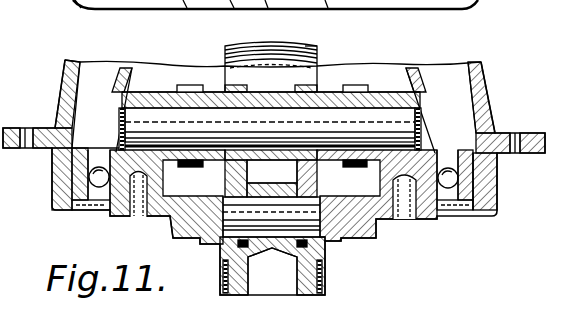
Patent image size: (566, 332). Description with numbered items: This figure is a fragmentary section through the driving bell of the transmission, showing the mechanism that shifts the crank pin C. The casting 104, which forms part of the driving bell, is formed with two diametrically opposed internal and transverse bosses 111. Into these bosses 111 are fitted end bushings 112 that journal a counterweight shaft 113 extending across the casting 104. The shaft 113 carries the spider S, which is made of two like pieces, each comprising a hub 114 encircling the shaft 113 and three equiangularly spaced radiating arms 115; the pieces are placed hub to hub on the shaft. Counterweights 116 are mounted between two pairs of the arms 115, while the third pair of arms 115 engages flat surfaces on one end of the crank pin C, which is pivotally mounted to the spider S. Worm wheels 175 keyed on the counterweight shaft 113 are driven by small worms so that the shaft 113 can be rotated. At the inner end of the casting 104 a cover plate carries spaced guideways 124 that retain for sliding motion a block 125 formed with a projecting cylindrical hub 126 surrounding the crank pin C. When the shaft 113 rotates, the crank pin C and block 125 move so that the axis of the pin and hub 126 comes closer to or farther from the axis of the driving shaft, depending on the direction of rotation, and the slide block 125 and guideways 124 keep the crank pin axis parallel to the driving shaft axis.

The casting 104 is at (133, 73).
The internal and transverse bosses 111 is at (123, 91).
The end bushings 112 is at (120, 104).
The counterweight shaft 113 is at (270, 127).
The hub 114 is at (270, 125).
The radiating arms 115 is at (300, 172).
The counterweights 116 is at (272, 90).
The guideways 124 is at (181, 230).
The block 125 is at (326, 256).
The cylindrical hub 126 is at (326, 279).
The worm wheels 175 is at (192, 85).
The spider S is at (317, 44).
The crank pin C is at (270, 282).